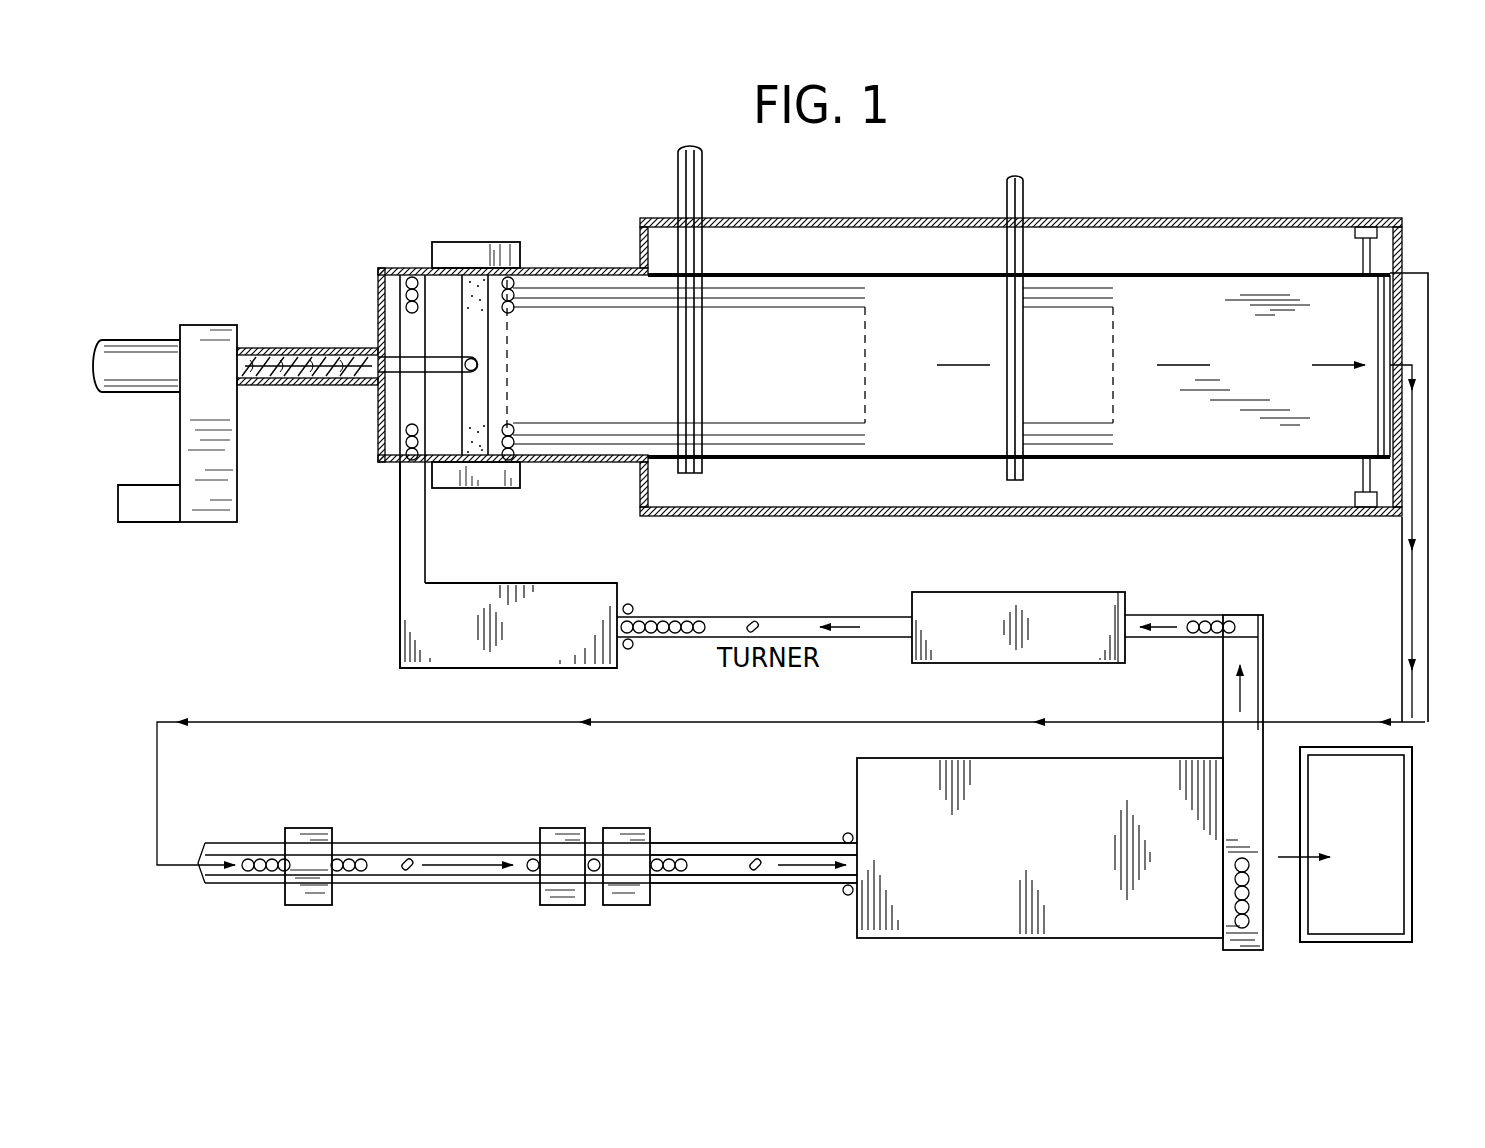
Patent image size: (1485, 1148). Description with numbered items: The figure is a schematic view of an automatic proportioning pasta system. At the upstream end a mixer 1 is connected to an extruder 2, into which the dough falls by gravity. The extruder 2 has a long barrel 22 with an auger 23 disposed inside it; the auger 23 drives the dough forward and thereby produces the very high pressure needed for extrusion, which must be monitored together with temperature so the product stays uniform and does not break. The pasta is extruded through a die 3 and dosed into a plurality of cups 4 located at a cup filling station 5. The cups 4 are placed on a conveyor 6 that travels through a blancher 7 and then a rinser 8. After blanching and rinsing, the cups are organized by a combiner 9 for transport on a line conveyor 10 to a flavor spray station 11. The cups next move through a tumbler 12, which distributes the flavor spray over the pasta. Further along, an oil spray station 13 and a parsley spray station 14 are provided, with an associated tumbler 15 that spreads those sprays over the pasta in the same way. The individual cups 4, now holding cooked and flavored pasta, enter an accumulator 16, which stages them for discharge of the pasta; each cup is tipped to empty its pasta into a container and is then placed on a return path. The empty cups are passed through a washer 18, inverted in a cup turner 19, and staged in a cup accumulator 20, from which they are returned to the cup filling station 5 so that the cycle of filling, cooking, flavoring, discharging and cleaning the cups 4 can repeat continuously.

The mixer 1 is at (165, 310).
The extruder 2 is at (307, 357).
The auger 23 is at (290, 347).
The barrel 22 is at (330, 385).
The die 3 is at (493, 334).
The cup filling station 5 is at (480, 373).
The cups 4 is at (518, 456).
The conveyor 6 is at (806, 440).
The blancher 7 is at (882, 210).
The rinser 8 is at (1147, 216).
The combiner 9 is at (1422, 275).
The line conveyor 10 is at (1400, 570).
The flavor spray station 11 is at (312, 827).
The tumbler 12 is at (412, 843).
The oil spray station 13 is at (567, 827).
The parsley spray station 14 is at (626, 827).
The tumbler 15 is at (705, 842).
The accumulator 16 is at (853, 790).
The washer 18 is at (1012, 590).
The cup turner 19 is at (757, 617).
The cup accumulator 20 is at (500, 580).